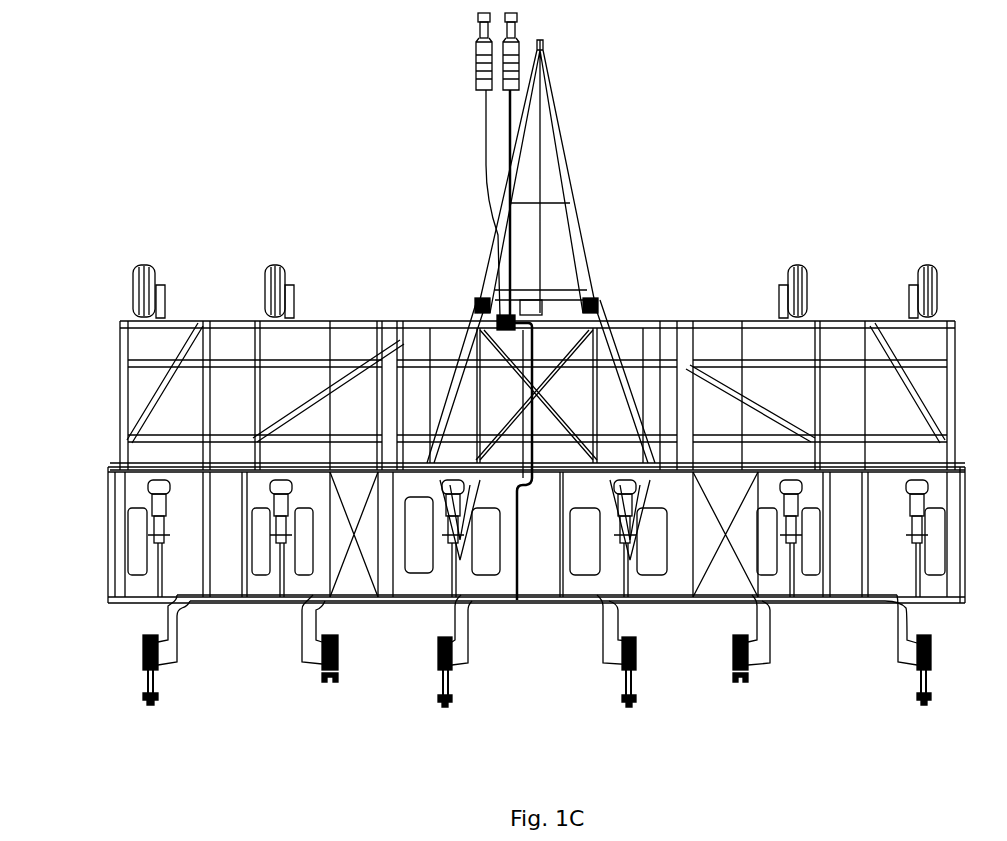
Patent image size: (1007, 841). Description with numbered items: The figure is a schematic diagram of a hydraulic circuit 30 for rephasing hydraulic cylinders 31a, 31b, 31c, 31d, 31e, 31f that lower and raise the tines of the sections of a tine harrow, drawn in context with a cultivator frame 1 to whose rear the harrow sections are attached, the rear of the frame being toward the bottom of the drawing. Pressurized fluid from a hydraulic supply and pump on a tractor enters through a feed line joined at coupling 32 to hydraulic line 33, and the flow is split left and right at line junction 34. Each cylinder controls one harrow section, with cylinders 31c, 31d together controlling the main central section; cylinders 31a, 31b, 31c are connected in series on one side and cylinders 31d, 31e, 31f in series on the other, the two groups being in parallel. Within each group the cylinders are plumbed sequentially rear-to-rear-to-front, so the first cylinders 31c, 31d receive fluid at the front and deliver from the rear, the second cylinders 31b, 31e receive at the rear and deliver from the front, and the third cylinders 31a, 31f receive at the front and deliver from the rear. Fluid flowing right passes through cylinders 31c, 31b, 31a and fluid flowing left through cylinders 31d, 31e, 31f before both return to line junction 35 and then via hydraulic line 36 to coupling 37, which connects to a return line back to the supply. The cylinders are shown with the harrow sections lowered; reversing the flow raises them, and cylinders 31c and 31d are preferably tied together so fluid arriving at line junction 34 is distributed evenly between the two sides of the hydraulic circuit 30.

The cultivator frame 1 is at (302, 193).
The hydraulic circuit 30 is at (539, 549).
The rephasing hydraulic cylinder 31a is at (931, 657).
The rephasing hydraulic cylinder 31b is at (733, 658).
The rephasing hydraulic cylinder 31c is at (636, 657).
The rephasing hydraulic cylinder 31d is at (438, 658).
The rephasing hydraulic cylinder 31e is at (338, 658).
The rephasing hydraulic cylinder 31f is at (143, 658).
The coupling 32 is at (478, 50).
The hydraulic line 33 is at (486, 132).
The line junction 34 is at (512, 602).
The line junction 35 is at (520, 606).
The hydraulic line 36 is at (510, 125).
The coupling 37 is at (516, 50).